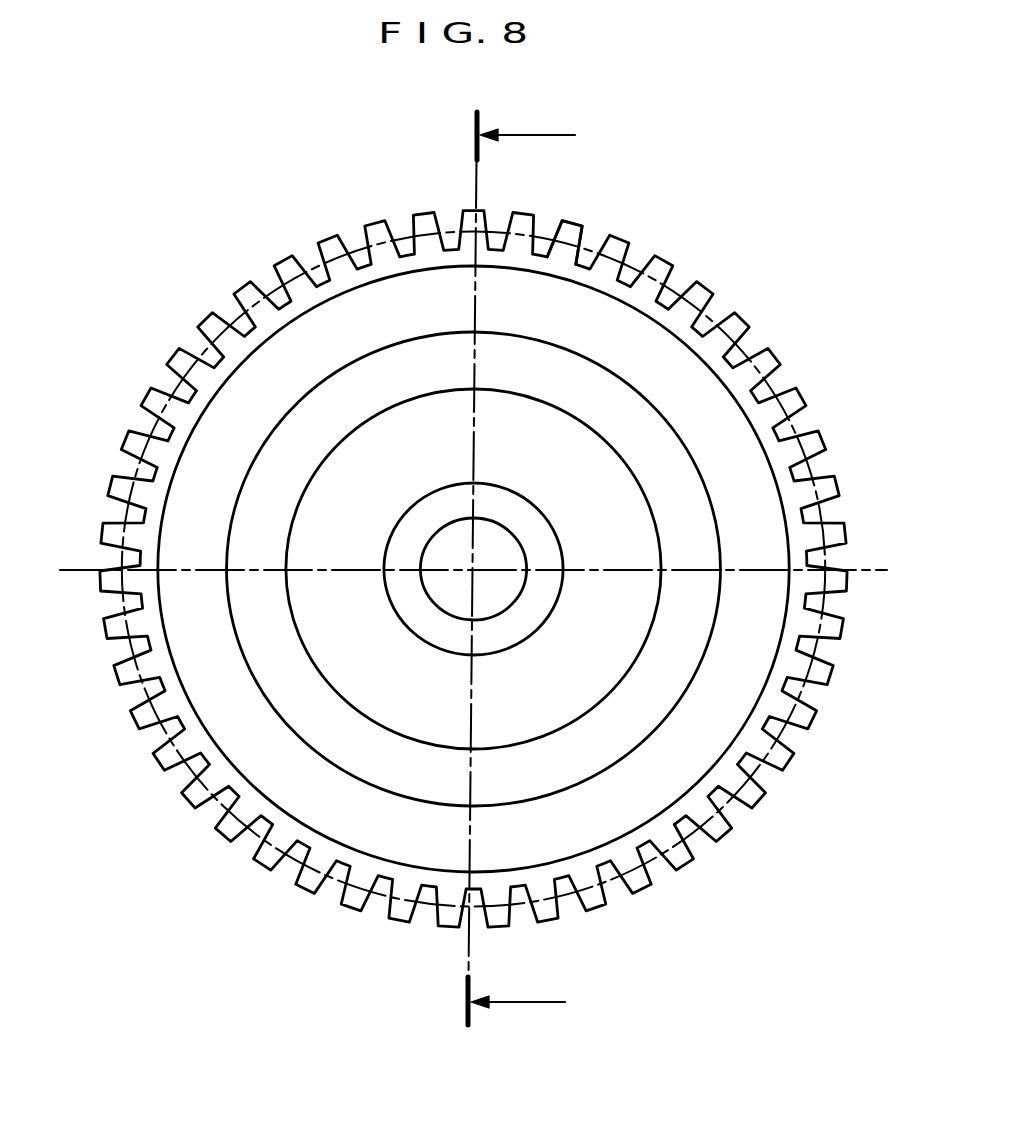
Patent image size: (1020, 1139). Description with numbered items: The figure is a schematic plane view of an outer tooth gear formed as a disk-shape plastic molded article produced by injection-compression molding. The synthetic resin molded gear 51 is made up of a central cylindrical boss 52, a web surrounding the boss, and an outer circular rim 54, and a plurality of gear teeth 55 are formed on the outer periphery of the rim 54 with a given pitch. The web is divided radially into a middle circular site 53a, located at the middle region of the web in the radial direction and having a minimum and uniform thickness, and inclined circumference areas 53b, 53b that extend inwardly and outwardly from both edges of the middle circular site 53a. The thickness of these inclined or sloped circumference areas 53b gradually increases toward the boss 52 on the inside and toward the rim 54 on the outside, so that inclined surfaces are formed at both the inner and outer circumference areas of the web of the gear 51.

The synthetic resin molded gear 51 is at (478, 587).
The cylindrical boss 52 is at (530, 604).
The middle circular site 53a is at (357, 397).
The inclined circumference areas 53b is at (393, 302).
The circular rim 54 is at (767, 420).
The gear teeth 55 is at (573, 225).